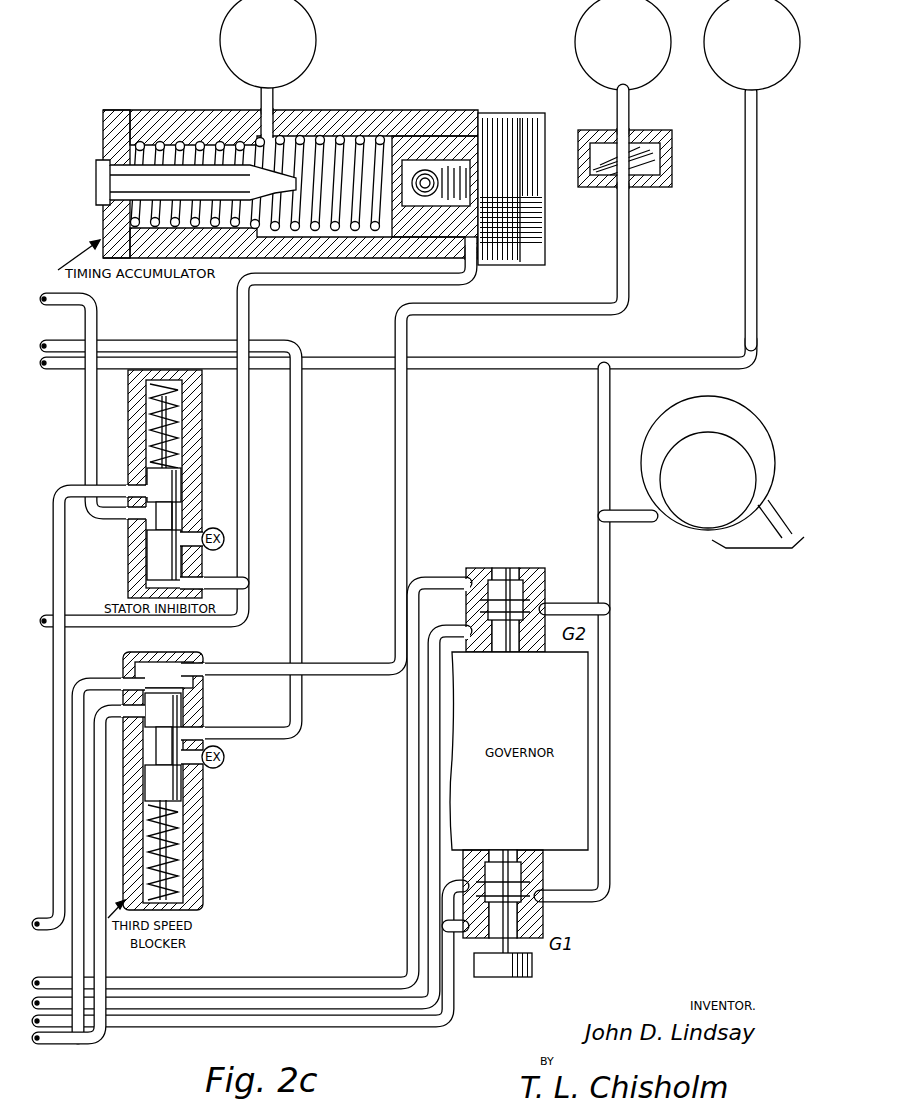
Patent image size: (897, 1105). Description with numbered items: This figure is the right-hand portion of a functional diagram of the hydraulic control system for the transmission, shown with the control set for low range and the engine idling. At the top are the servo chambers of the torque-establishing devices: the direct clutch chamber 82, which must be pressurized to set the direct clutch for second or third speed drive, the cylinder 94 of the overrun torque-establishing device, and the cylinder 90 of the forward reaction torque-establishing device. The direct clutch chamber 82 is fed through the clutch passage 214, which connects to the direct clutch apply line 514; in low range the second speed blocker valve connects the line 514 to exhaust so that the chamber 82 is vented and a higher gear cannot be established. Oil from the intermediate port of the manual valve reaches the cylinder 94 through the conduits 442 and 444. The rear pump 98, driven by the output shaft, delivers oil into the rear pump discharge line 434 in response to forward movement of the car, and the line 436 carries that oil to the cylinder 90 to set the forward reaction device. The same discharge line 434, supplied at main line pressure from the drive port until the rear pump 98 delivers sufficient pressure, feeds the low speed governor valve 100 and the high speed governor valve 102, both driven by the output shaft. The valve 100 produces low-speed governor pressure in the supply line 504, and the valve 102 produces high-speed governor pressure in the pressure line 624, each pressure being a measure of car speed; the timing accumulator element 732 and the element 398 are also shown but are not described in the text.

The direct clutch chamber 82 is at (316, 40).
The cylinder of the overrun torque-establishing device 94 is at (590, 64).
The cylinder of the forward reaction torque-establishing device 90 is at (736, 80).
The rear pump 98 is at (742, 412).
The rear pump intake / sump 398 is at (746, 548).
The high speed governor valve 102 is at (535, 568).
The low speed governor valve 100 is at (545, 906).
The timing accumulator plunger 732 is at (135, 172).
The clutch passage 214 is at (275, 102).
The rear pump discharge line 434 is at (52, 366).
The line 436 is at (757, 240).
The conduit 444 is at (628, 256).
The direct clutch apply line 514 is at (395, 290).
The conduit 442 is at (108, 660).
The G1 supply line 504 is at (120, 1012).
The G2 pressure line 624 is at (303, 976).